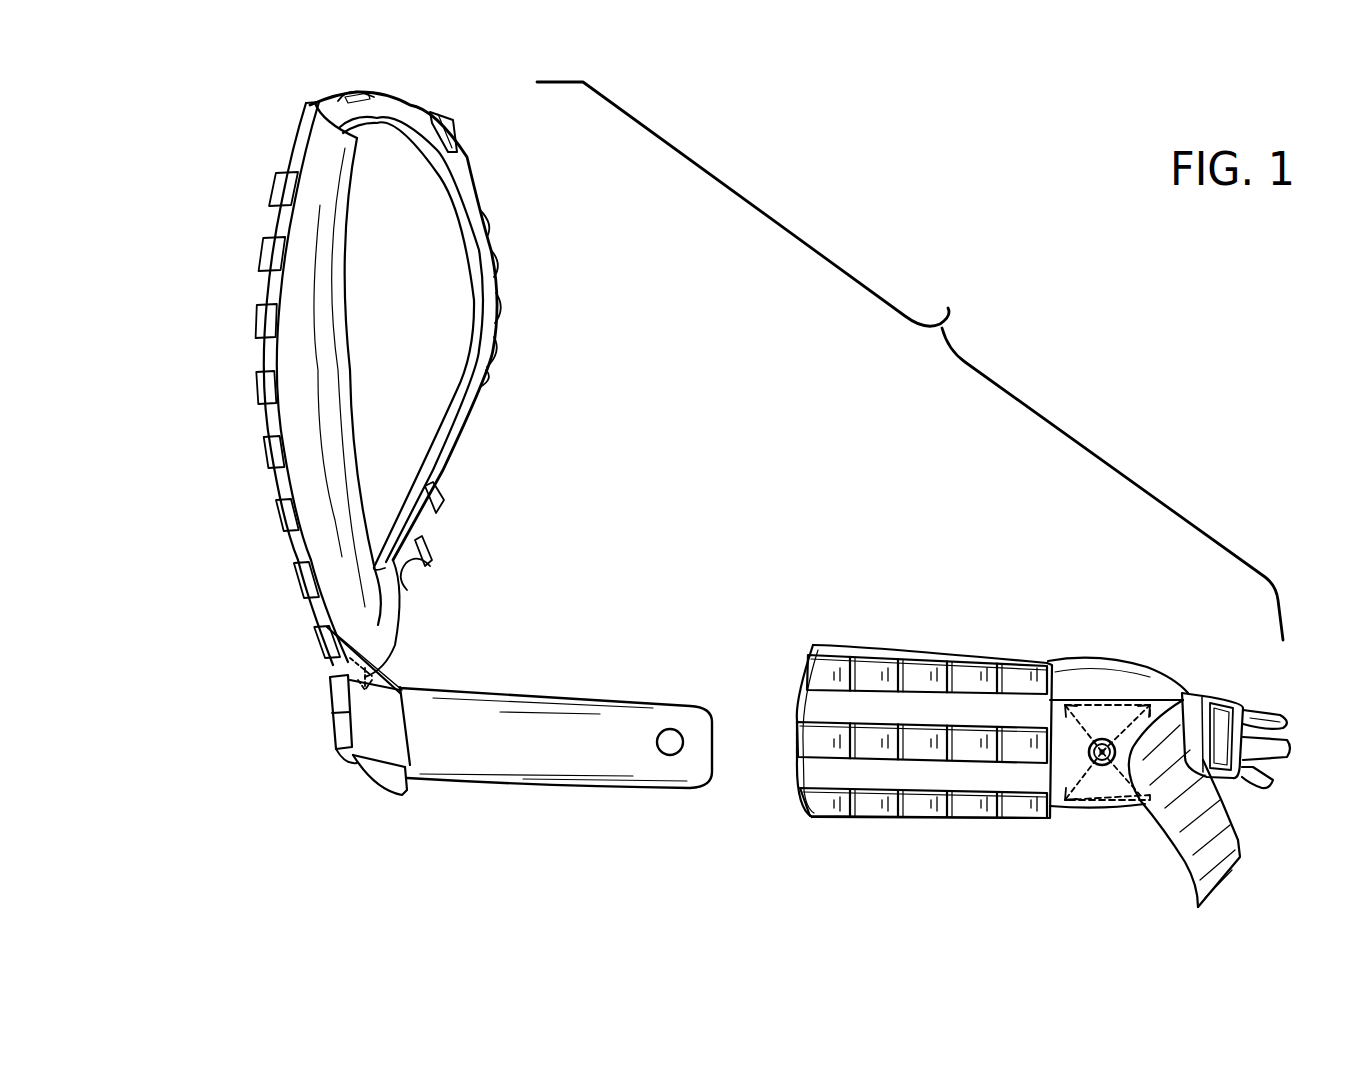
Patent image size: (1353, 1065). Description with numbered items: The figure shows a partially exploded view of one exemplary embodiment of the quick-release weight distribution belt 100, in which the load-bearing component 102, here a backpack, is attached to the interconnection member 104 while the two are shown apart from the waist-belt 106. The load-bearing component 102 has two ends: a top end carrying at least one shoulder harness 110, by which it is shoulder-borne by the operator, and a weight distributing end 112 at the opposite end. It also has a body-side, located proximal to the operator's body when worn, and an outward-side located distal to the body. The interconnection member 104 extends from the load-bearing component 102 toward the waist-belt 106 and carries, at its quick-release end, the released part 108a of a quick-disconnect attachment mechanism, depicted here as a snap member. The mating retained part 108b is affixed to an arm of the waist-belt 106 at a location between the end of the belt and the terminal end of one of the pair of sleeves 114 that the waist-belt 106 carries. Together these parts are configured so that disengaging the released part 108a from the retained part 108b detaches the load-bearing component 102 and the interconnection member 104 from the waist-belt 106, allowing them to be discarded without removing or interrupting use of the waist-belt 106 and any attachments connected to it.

The quick-release weight distribution belt 100 is at (910, 361).
The load-bearing component 102 is at (238, 122).
The interconnection member 104 is at (537, 787).
The waist-belt 106 is at (1043, 727).
The released part 108a is at (671, 740).
The retained part 108b is at (1102, 739).
The shoulder harness 110 is at (472, 157).
The weight distributing end 112 is at (335, 723).
The sleeves 114 is at (928, 652).